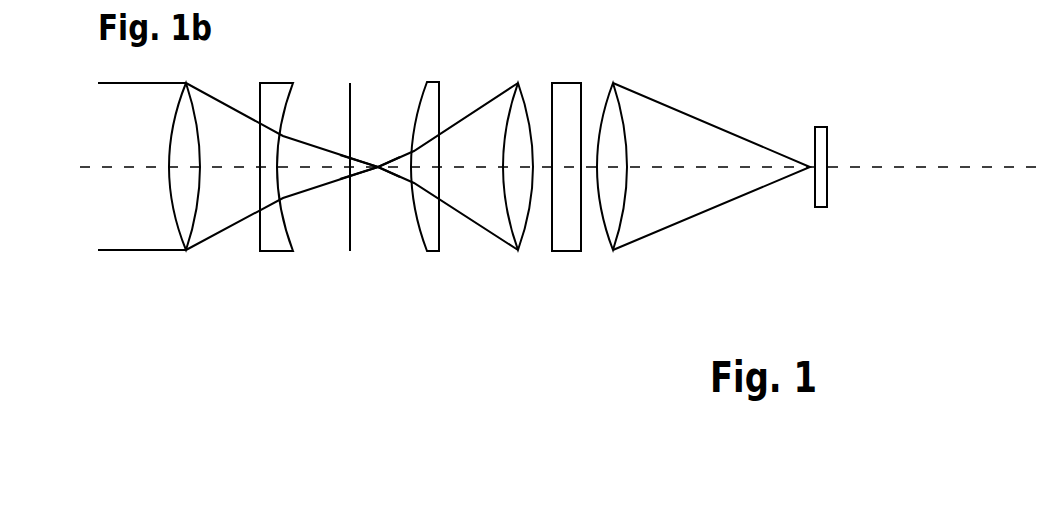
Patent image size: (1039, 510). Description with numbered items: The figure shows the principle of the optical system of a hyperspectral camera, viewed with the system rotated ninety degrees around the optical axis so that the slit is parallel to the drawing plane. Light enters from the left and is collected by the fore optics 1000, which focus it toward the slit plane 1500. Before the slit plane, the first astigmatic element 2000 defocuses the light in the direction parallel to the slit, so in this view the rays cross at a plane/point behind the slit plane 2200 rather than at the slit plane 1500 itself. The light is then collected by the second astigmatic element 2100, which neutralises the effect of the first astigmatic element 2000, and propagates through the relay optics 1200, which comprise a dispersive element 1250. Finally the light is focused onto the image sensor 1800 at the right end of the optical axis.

The fore optics 1000 is at (163, 193).
The first astigmatic element 2000 is at (278, 193).
The slit plane 1500 is at (346, 151).
The plane/point behind the slit plane 2200 is at (322, 277).
The second astigmatic element 2100 is at (430, 193).
The relay optics 1200 is at (567, 130).
The dispersive element 1250 is at (564, 297).
The image sensor 1800 is at (822, 148).